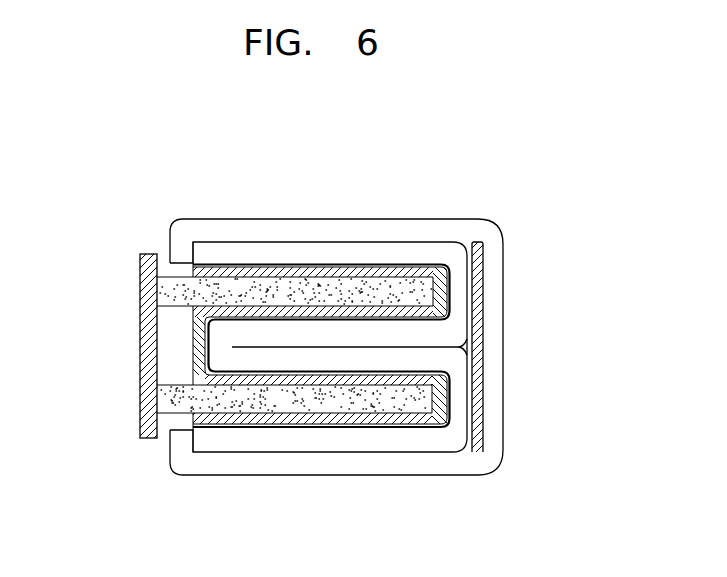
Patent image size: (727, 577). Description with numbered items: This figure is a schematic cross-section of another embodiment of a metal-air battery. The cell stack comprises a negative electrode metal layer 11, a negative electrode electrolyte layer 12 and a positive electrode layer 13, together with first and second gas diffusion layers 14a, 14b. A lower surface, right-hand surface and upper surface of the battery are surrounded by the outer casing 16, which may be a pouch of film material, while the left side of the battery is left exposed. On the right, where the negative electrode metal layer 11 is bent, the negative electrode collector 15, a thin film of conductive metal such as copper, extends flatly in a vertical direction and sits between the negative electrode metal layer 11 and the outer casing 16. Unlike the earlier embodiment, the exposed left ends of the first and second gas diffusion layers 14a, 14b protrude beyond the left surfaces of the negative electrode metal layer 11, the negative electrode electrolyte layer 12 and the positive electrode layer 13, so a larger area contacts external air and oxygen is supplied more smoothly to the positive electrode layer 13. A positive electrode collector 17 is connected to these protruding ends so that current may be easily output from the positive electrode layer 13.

The negative electrode metal layer 11 is at (372, 252).
The negative electrode electrolyte layer 12 is at (331, 264).
The positive electrode layer 13 is at (293, 272).
The first gas diffusion layer 14a is at (244, 398).
The second gas diffusion layer 14b is at (247, 290).
The negative electrode collector 15 is at (478, 242).
The outer casing 16 is at (416, 230).
The positive electrode collector 17 is at (153, 254).